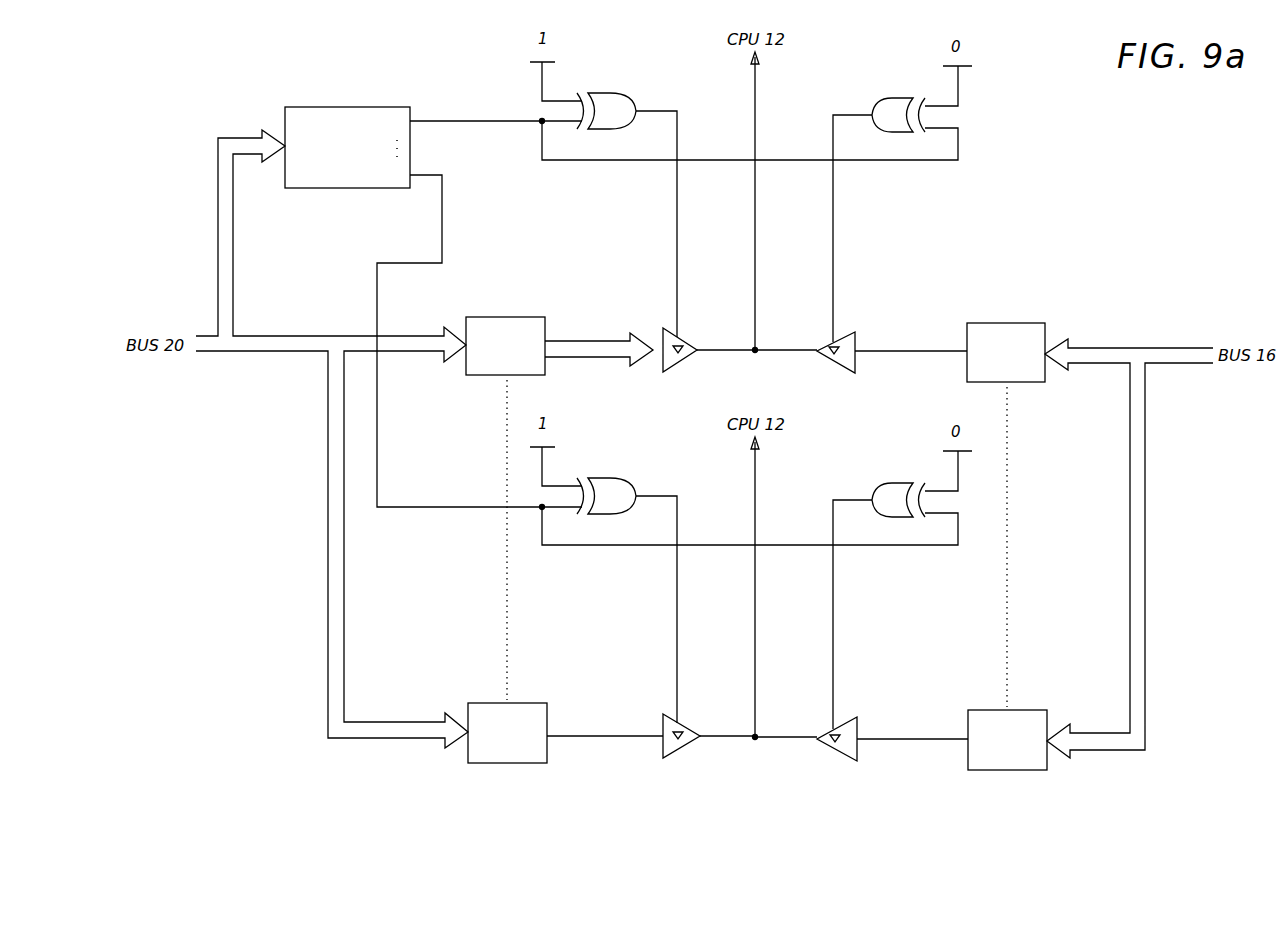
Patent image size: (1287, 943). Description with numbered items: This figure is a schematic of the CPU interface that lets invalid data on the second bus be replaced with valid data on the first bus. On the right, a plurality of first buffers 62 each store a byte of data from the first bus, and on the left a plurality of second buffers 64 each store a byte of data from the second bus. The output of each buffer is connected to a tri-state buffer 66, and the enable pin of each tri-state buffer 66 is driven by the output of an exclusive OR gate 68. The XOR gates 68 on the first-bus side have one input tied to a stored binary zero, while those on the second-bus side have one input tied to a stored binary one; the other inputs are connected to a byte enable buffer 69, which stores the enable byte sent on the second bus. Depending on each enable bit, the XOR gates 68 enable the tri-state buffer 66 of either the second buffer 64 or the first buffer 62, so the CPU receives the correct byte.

The first buffers 62 is at (1000, 323).
The second buffers 64 is at (513, 317).
The tri-state buffer 66 is at (680, 370).
The exclusive OR (XOR) gate 68 is at (605, 93).
The byte enable buffer 69 is at (355, 107).